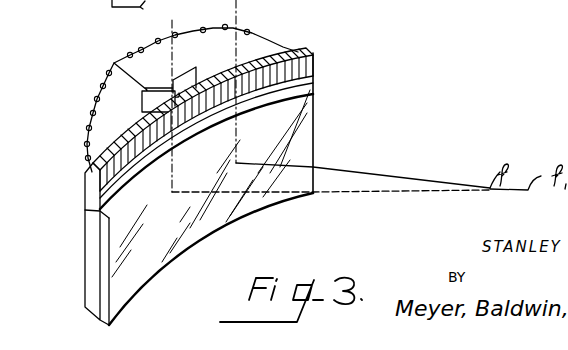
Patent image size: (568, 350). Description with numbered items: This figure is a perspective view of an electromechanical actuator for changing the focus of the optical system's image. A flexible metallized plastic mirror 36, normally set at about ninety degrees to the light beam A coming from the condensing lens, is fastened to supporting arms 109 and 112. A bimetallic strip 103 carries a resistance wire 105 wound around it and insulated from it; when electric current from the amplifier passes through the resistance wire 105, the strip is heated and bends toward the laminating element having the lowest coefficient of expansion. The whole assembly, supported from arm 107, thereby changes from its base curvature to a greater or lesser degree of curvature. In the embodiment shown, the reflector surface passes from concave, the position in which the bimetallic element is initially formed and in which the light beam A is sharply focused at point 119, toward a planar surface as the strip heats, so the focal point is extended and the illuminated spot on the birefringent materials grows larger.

The flexible metallized plastic mirror 36 is at (313, 118).
The bimetallic strip 103 is at (311, 54).
The resistance wire 105 is at (283, 44).
The arm 107 is at (110, 65).
The supporting arm 109 is at (90, 237).
The supporting arm 112 is at (311, 90).
The focal point 119 is at (484, 190).
The light beam A is at (228, 137).